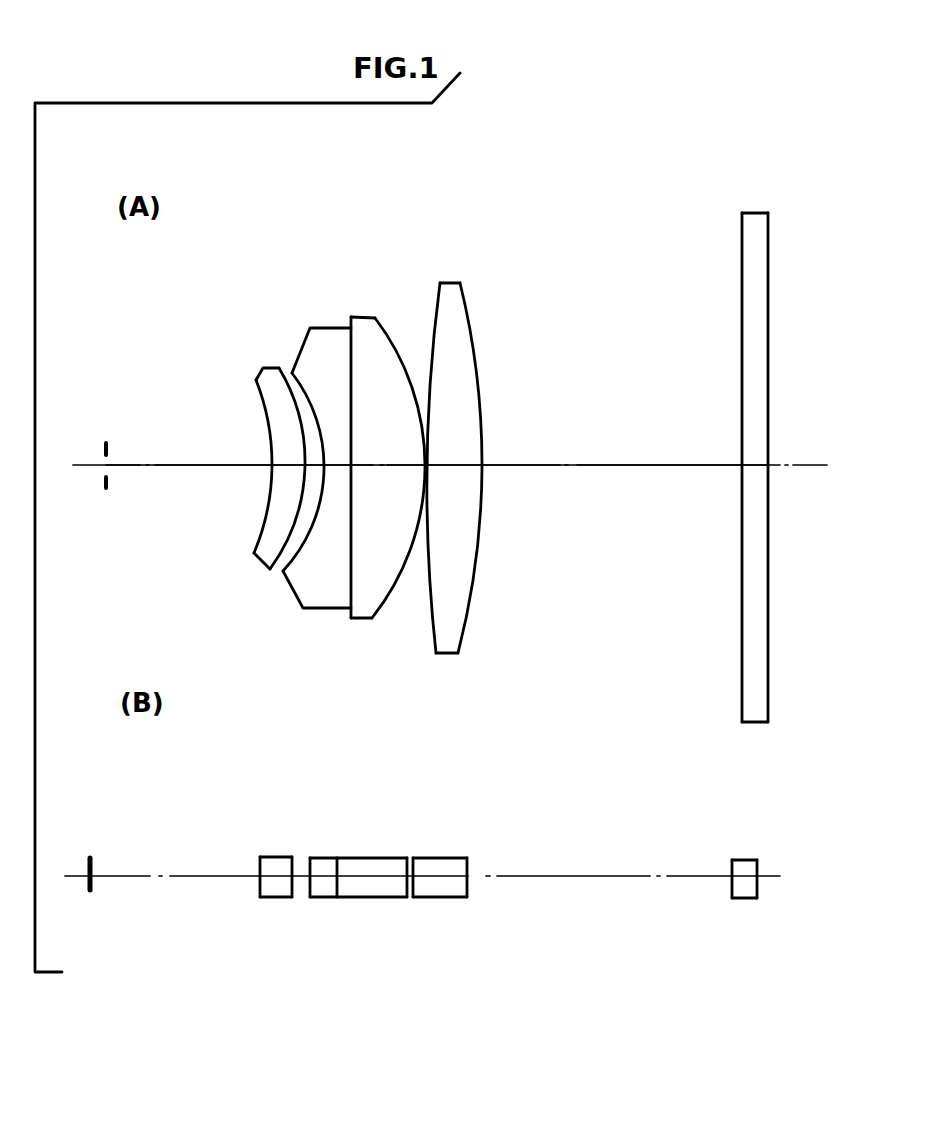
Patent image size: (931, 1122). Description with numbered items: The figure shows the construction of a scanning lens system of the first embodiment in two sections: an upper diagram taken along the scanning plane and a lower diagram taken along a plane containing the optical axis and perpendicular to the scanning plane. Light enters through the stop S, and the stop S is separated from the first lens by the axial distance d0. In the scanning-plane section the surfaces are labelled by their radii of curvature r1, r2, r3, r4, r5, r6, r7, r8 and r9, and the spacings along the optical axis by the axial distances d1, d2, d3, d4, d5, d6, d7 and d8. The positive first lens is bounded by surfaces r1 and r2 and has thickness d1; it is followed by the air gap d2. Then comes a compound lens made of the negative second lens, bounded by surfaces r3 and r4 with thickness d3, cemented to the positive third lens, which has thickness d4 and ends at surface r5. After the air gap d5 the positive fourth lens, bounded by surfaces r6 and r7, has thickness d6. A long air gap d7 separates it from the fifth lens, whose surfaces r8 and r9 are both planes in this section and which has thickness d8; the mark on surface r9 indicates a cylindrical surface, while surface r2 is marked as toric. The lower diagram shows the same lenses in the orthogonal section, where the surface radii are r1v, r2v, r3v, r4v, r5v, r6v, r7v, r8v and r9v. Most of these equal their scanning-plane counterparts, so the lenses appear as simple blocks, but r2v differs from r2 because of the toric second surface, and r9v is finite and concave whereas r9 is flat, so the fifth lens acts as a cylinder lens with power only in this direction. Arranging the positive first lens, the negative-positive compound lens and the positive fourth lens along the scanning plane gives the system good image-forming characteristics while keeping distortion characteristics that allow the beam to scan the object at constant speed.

The stop S is at (106, 443).
The radius of curvature of the first surface r1 is at (262, 394).
The radius of curvature of the second surface r2 is at (282, 366).
The radius of curvature of the third surface r3 is at (283, 370).
The radius of curvature of the fourth surface r4 is at (353, 338).
The radius of curvature of the fifth surface r5 is at (388, 333).
The radius of curvature of the sixth surface r6 is at (436, 302).
The radius of curvature of the seventh surface r7 is at (467, 305).
The radius of curvature of the eighth surface r8 is at (740, 250).
The radius of curvature of the ninth surface r9 is at (768, 252).
The axial distance from the stop to the first lens d0 is at (195, 467).
The axial thickness of the first lens d1 is at (287, 467).
The axial air gap between first and second lenses d2 is at (315, 468).
The axial thickness of the second lens d3 is at (338, 467).
The axial thickness of the third lens d4 is at (366, 467).
The axial air gap between third and fourth lenses d5 is at (427, 476).
The axial thickness of the fourth lens d6 is at (454, 468).
The axial air gap between fourth and fifth lenses d7 is at (585, 467).
The axial thickness of the fifth lens d8 is at (757, 470).
The radius of curvature of the first surface in the subscanning direction r1v is at (260, 887).
The radius of curvature of the second surface in the subscanning direction r2v is at (293, 857).
The radius of curvature of the third surface in the subscanning direction r3v is at (310, 896).
The radius of curvature of the fourth surface in the subscanning direction r4v is at (337, 868).
The radius of curvature of the fifth surface in the subscanning direction r5v is at (407, 890).
The radius of curvature of the sixth surface in the subscanning direction r6v is at (413, 867).
The radius of curvature of the seventh surface in the subscanning direction r7v is at (467, 887).
The radius of curvature of the eighth surface in the subscanning direction r8v is at (732, 870).
The radius of curvature of the ninth surface in the subscanning direction r9v is at (757, 887).